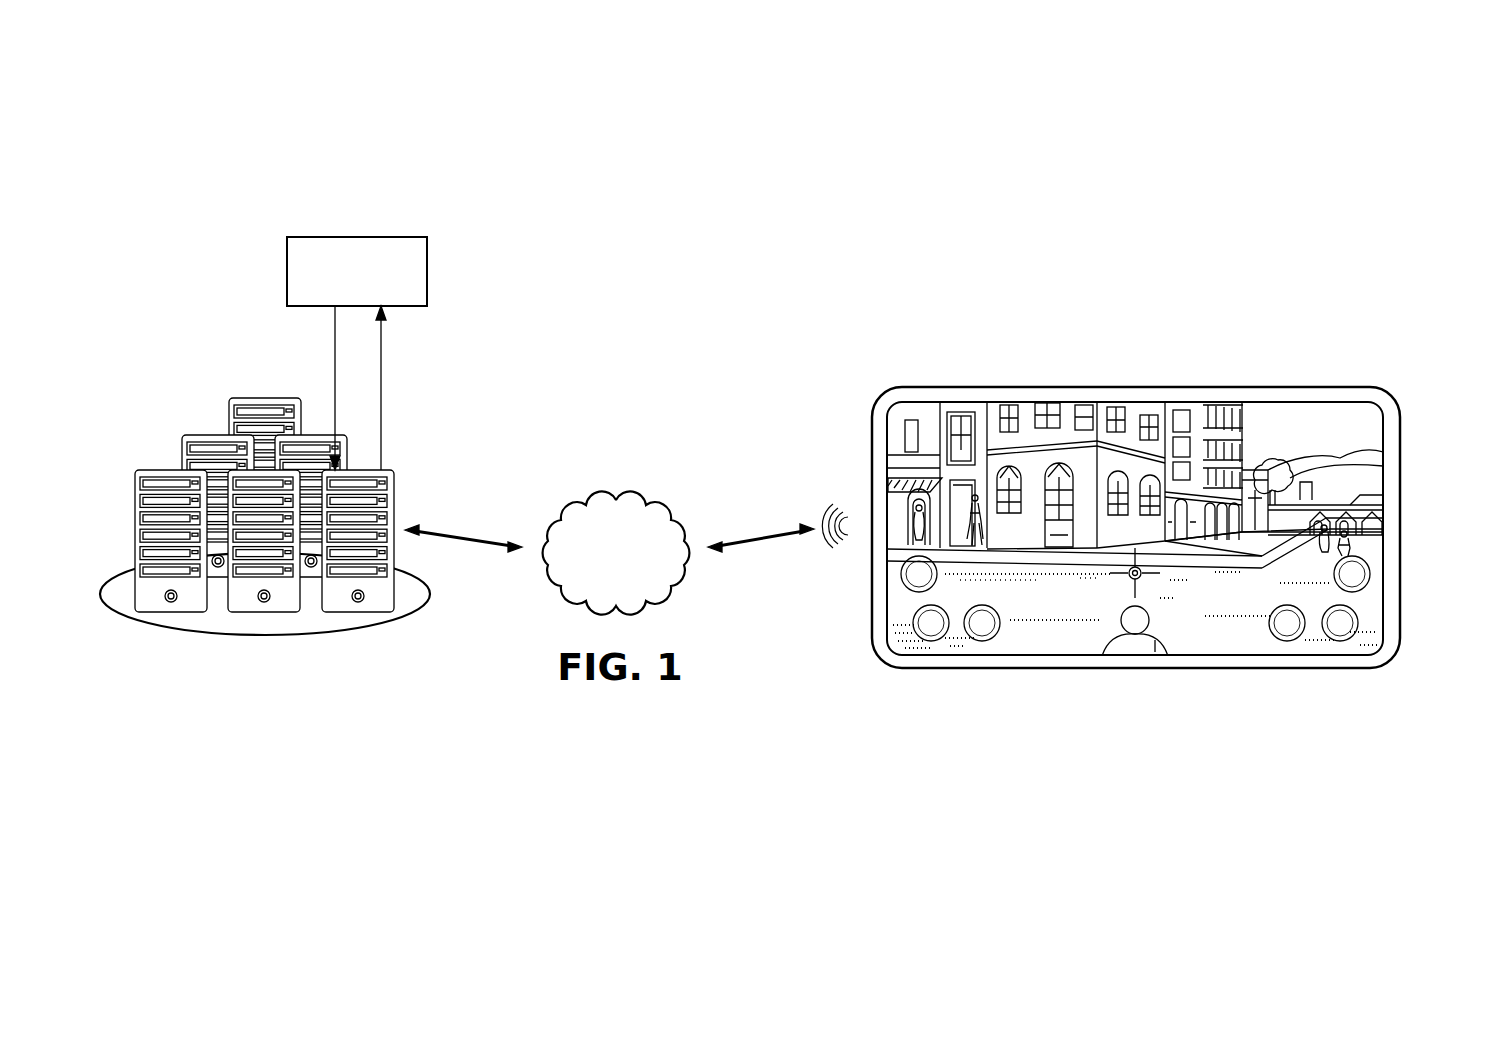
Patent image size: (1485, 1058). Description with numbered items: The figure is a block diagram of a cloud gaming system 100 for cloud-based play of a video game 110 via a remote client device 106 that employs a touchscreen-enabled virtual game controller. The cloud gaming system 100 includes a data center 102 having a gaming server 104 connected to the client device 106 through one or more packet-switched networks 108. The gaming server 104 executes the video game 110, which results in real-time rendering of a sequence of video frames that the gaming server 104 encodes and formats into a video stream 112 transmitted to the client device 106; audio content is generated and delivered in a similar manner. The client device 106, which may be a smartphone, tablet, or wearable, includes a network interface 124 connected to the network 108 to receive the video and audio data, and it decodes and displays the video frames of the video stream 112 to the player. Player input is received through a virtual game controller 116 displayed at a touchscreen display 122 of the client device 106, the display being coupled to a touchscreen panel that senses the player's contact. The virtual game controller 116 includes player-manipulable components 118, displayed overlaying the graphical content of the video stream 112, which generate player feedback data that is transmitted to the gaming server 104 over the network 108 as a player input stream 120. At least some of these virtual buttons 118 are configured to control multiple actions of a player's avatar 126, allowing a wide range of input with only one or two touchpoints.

The cloud gaming system 100 is at (1070, 226).
The data center 102 is at (194, 400).
The gaming server 104 is at (270, 612).
The client device 106 is at (1203, 388).
The packet-switched network 108 is at (593, 568).
The video game software application 110 is at (357, 236).
The video stream 112 is at (333, 392).
The virtual game controller 116 is at (895, 748).
The player-manipulable components 118 is at (901, 577).
The player input stream 120 is at (384, 392).
The touchscreen display 122 is at (1085, 408).
The network interface 124 is at (828, 537).
The player's avatar 126 is at (1170, 648).